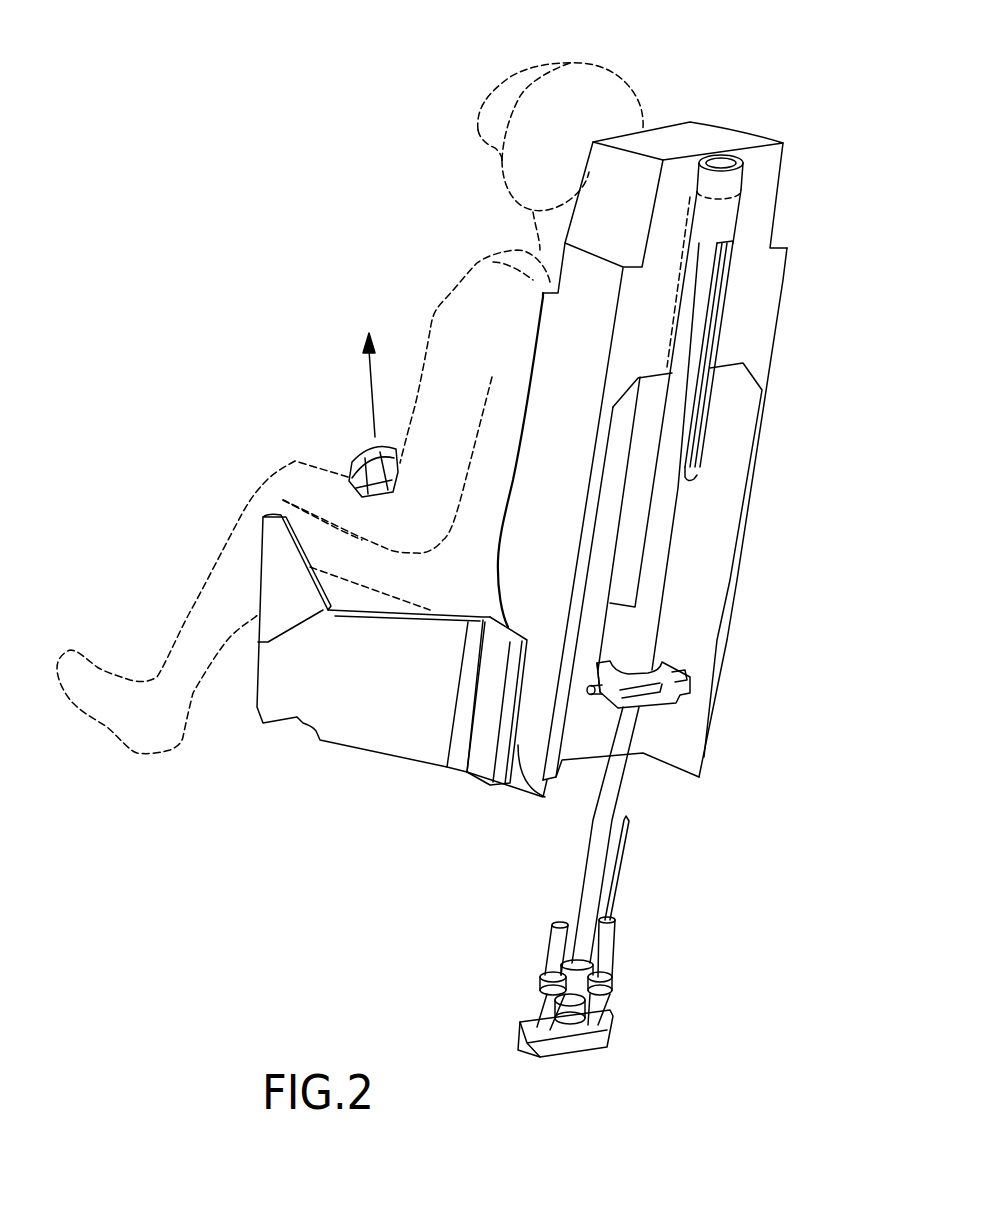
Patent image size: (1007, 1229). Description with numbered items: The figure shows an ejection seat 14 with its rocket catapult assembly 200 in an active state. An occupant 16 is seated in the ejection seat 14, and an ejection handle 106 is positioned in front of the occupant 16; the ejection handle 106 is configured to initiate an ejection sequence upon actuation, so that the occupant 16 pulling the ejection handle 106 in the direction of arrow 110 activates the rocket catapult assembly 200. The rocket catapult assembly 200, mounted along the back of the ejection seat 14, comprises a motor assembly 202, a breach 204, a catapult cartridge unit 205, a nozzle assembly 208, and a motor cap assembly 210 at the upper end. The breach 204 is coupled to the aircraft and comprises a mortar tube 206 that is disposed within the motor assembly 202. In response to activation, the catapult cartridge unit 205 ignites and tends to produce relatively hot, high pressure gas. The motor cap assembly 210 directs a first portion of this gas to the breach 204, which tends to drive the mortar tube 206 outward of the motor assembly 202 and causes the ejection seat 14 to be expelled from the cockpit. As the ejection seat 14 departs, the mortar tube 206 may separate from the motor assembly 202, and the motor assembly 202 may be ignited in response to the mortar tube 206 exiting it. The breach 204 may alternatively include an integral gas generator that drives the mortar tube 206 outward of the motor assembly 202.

The ejection seat 14 is at (749, 108).
The occupant 16 is at (652, 75).
The ejection handle 106 is at (335, 450).
The arrow 110 is at (363, 368).
The rocket catapult assembly 200 is at (786, 402).
The motor assembly 202 is at (697, 312).
The breach 204 is at (610, 983).
The catapult cartridge unit 205 is at (541, 975).
The mortar tube 206 is at (597, 873).
The nozzle assembly 208 is at (658, 677).
The motor cap assembly 210 is at (745, 158).